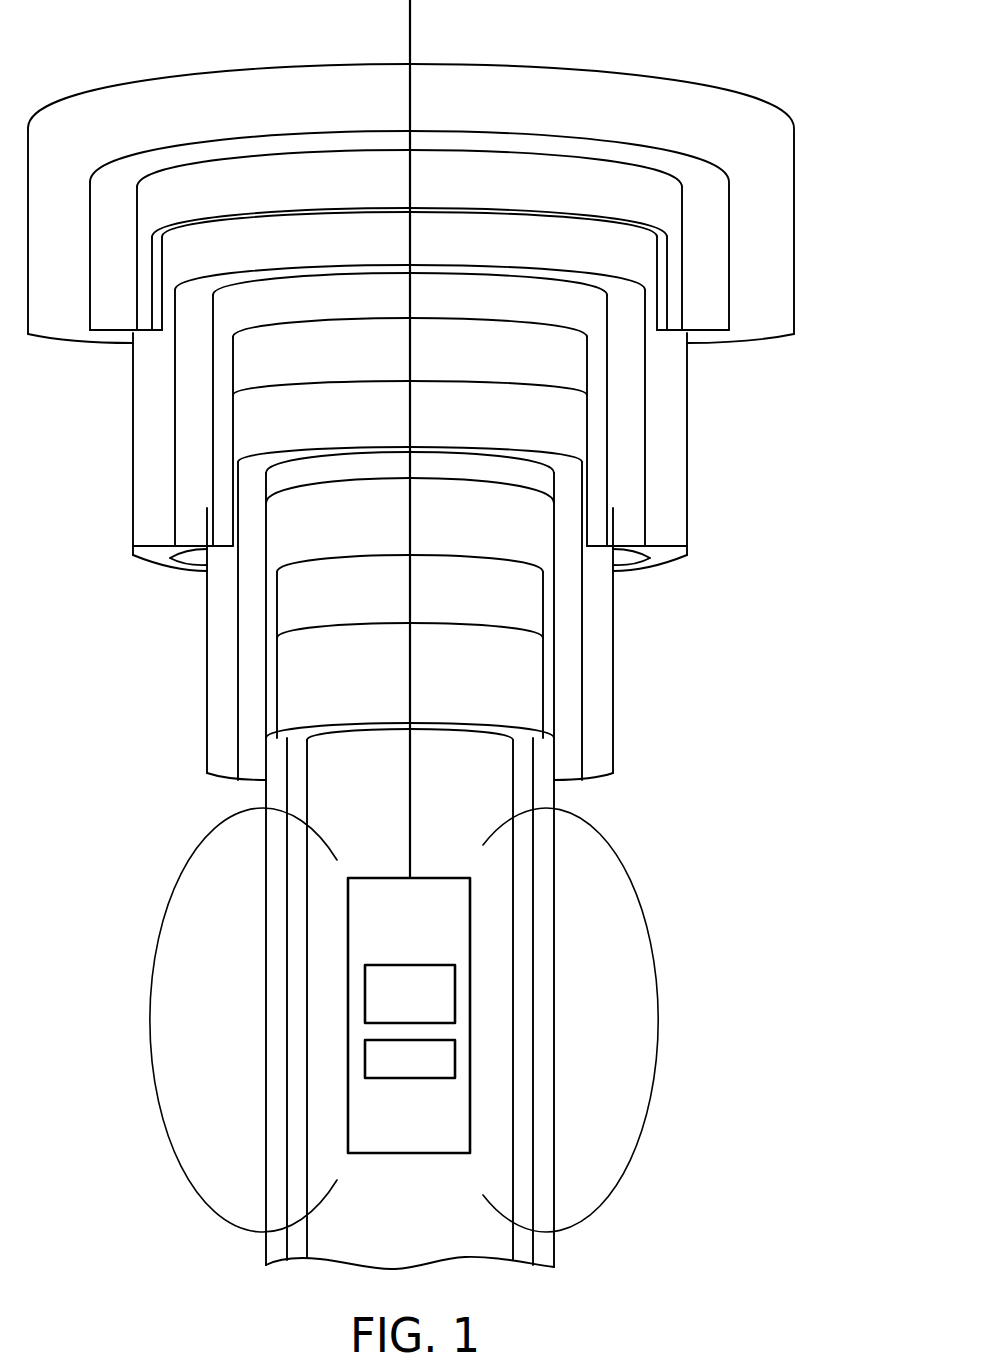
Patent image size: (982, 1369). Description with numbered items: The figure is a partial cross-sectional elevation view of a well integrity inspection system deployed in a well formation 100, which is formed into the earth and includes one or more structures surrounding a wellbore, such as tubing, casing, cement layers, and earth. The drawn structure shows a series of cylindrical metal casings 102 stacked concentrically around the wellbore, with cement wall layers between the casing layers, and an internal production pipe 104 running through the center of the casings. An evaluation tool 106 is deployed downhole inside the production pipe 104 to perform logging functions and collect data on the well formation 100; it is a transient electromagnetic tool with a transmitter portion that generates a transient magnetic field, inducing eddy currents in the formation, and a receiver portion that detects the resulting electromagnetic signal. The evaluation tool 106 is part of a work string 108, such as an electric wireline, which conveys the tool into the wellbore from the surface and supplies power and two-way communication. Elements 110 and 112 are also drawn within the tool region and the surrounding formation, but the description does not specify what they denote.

The well formation 100 is at (767, 33).
The cylindrical metal casings 102 is at (779, 243).
The internal production pipe 104 is at (545, 1060).
The evaluation tool 106 is at (470, 902).
The work string 108 is at (410, 30).
The sensor element 110 is at (365, 1068).
The sensing region 112 is at (177, 893).